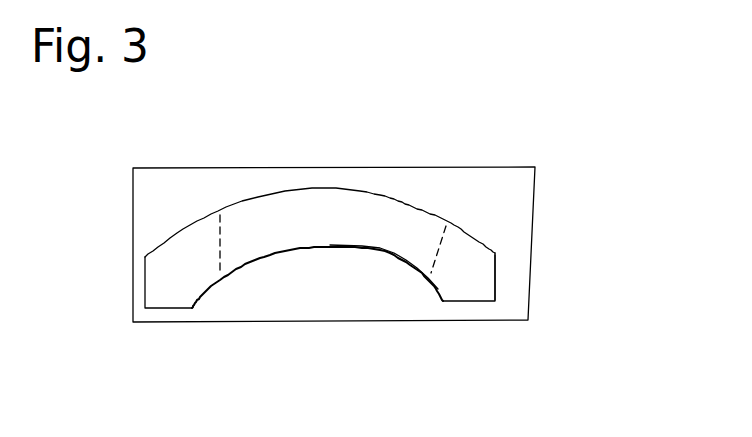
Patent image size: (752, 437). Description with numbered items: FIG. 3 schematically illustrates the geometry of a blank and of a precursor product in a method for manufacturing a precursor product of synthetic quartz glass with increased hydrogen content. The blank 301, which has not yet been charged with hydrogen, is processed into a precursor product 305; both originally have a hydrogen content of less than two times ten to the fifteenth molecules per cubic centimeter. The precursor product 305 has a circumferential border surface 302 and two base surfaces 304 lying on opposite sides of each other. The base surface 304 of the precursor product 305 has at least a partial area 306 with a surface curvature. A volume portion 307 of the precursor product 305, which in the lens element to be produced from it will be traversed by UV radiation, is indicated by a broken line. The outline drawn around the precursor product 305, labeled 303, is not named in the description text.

The blank 301 is at (602, 188).
The circumferential border surface 302 is at (495, 278).
The frame 303 is at (530, 248).
The base surface 304 is at (382, 192).
The precursor product 305 is at (272, 260).
The partial area with a surface curvature 306 is at (232, 283).
The volume portion 307 is at (443, 255).